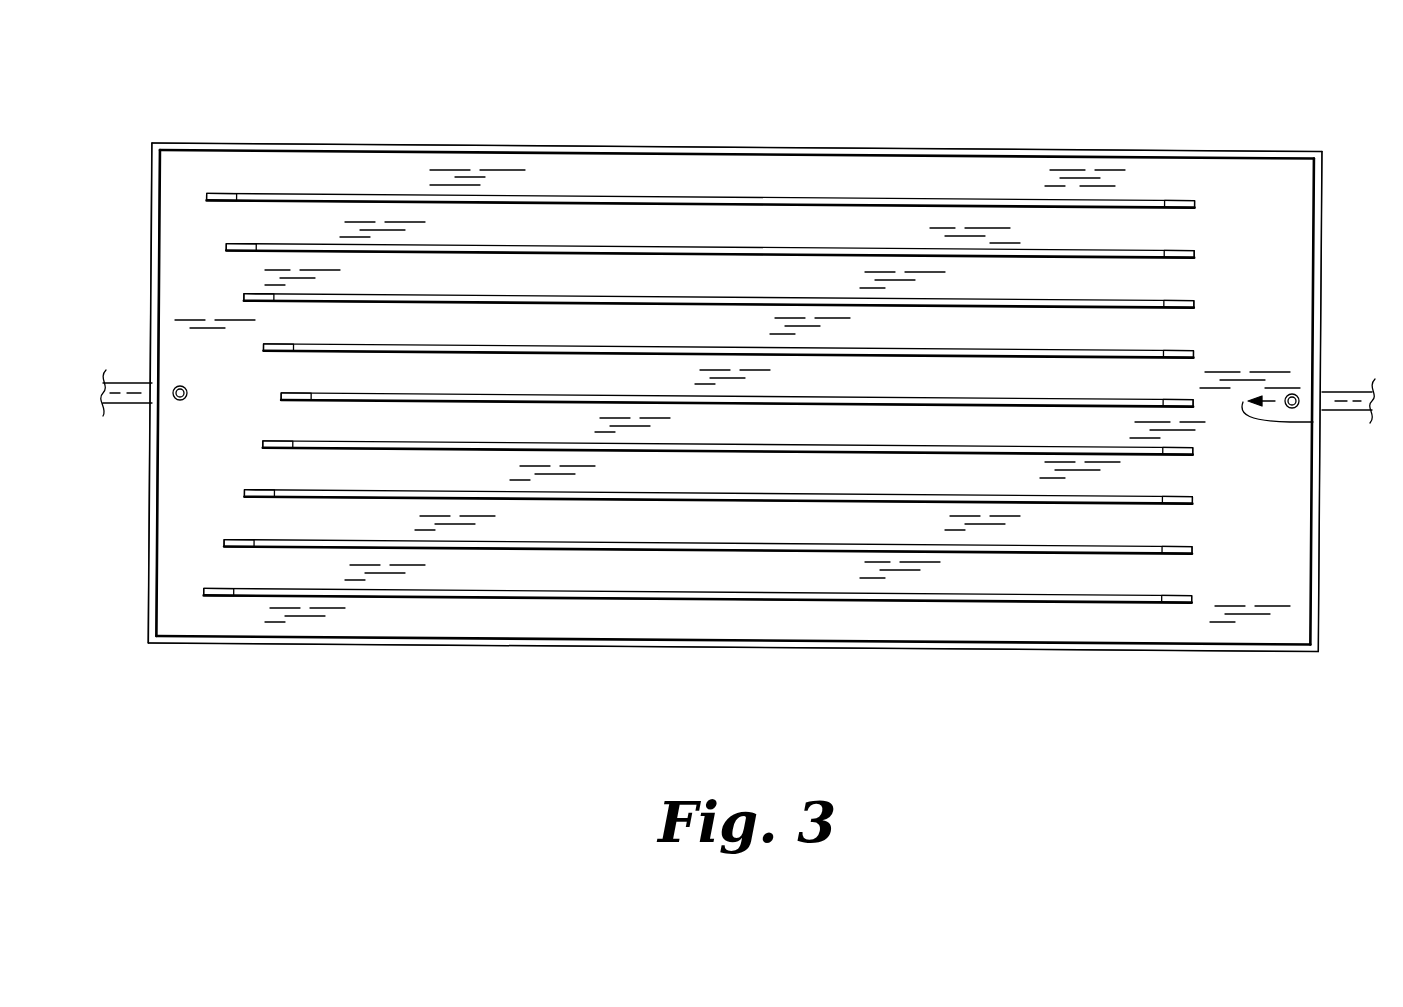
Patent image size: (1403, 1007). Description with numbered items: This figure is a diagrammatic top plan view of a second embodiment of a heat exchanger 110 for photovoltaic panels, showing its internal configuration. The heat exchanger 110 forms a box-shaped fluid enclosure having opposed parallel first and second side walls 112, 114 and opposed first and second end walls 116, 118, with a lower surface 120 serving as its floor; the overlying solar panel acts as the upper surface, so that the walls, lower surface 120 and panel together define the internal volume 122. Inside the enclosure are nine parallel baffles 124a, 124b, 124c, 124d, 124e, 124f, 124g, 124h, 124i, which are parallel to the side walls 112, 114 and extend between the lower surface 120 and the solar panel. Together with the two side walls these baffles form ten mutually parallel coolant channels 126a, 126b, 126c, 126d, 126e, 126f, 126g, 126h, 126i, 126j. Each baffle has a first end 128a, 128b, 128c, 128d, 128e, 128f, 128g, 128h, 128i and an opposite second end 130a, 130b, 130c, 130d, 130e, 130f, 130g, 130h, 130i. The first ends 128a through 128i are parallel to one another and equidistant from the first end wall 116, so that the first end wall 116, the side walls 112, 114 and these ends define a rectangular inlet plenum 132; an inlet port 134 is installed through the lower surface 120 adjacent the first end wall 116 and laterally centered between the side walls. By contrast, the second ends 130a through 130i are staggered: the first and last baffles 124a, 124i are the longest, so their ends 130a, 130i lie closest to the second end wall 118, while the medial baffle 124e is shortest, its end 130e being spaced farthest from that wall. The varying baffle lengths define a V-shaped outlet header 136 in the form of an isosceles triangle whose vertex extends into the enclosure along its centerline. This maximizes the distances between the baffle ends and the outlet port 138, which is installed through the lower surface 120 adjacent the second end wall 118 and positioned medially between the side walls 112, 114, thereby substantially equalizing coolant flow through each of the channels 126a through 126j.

The heat exchanger 110 is at (424, 700).
The first side wall 112 is at (820, 146).
The second side wall 114 is at (577, 642).
The first end wall 116 is at (1358, 252).
The second end wall 118 is at (153, 165).
The lower surface 120 is at (345, 170).
The internal volume 122 is at (1040, 622).
The first baffle 124a is at (950, 196).
The baffle 124b is at (1035, 247).
The baffle 124c is at (1068, 297).
The baffle 124d is at (1100, 347).
The medial baffle 124e is at (1125, 398).
The baffle 124f is at (792, 447).
The baffle 124g is at (887, 502).
The baffle 124h is at (960, 552).
The last baffle 124i is at (1105, 602).
The coolant channel 126a is at (777, 173).
The coolant channel 126b is at (680, 225).
The coolant channel 126c is at (605, 272).
The coolant channel 126d is at (512, 323).
The coolant channel 126e is at (945, 372).
The coolant channel 126f is at (857, 421).
The coolant channel 126g is at (815, 468).
The coolant channel 126h is at (717, 517).
The coolant channel 126i is at (642, 566).
The coolant channel 126j is at (777, 615).
The first end of baffle 128a is at (1197, 203).
The first end of baffle 128b is at (1197, 253).
The first end of baffle 128c is at (1197, 303).
The first end of baffle 128d is at (1197, 352).
The first end of baffle 128e is at (1197, 403).
The first end of baffle 128f is at (1197, 452).
The first end of baffle 128g is at (1197, 502).
The first end of baffle 128h is at (1197, 550).
The first end of baffle 128i is at (1197, 600).
The second end of baffle 130a is at (207, 196).
The second end of baffle 130b is at (227, 246).
The second end of baffle 130c is at (245, 296).
The second end of baffle 130d is at (265, 346).
The second end of baffle 130e is at (283, 395).
The second end of baffle 130f is at (266, 443).
The second end of baffle 130g is at (247, 492).
The second end of baffle 130h is at (227, 542).
The second end of baffle 130i is at (207, 591).
The inlet plenum 132 is at (1300, 346).
The inlet port 134 is at (1320, 422).
The outlet header 136 is at (207, 362).
The outlet port 138 is at (189, 418).